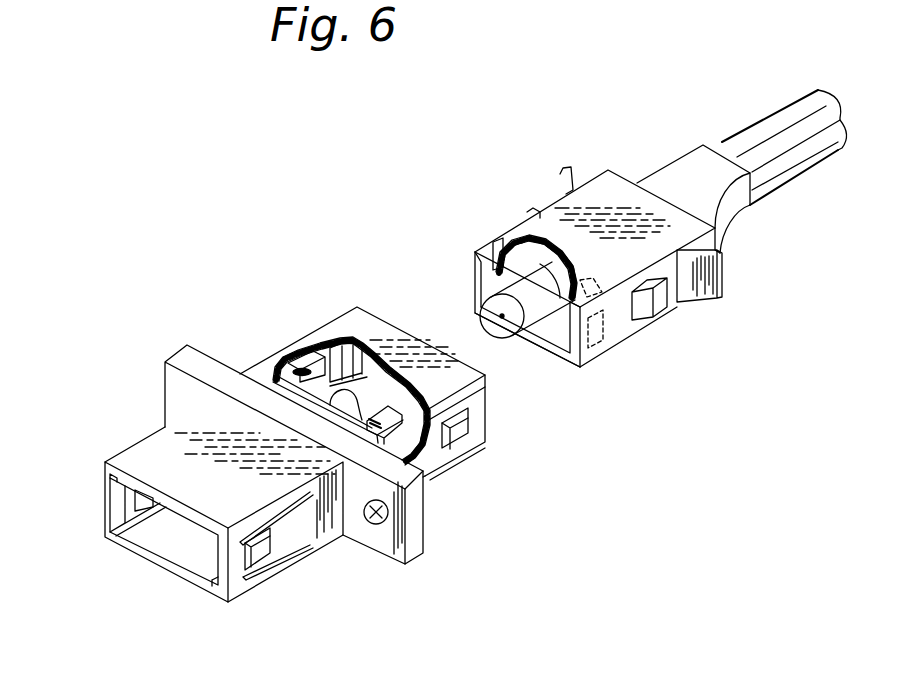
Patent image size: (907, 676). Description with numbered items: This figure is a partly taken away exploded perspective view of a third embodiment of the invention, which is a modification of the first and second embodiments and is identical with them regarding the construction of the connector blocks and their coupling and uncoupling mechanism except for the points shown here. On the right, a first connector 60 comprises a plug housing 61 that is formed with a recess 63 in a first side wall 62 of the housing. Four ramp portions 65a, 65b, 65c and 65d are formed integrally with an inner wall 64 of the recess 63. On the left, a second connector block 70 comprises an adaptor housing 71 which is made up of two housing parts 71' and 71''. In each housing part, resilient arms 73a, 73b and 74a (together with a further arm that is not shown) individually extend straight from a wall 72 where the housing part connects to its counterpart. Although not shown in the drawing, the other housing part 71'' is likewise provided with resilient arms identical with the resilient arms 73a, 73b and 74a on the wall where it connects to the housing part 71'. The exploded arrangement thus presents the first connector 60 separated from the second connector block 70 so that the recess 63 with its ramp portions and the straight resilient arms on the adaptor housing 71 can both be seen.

The first connector 60 is at (594, 126).
The plug housing 61 is at (635, 195).
The first side wall 62 is at (588, 363).
The recess 63 is at (558, 343).
The inner wall 64 is at (544, 256).
The ramp portion 65a is at (605, 293).
The ramp portion 65b is at (603, 348).
The ramp portion 65c is at (510, 252).
The ramp portion 65d is at (492, 256).
The second connector block 70 is at (233, 284).
The adaptor housing 71 is at (253, 438).
The housing part 71' is at (294, 432).
The housing part 71'' is at (220, 466).
The wall 72 is at (333, 412).
The resilient arm 73a is at (430, 448).
The resilient arm 73b is at (425, 478).
The resilient arm 74a is at (310, 372).